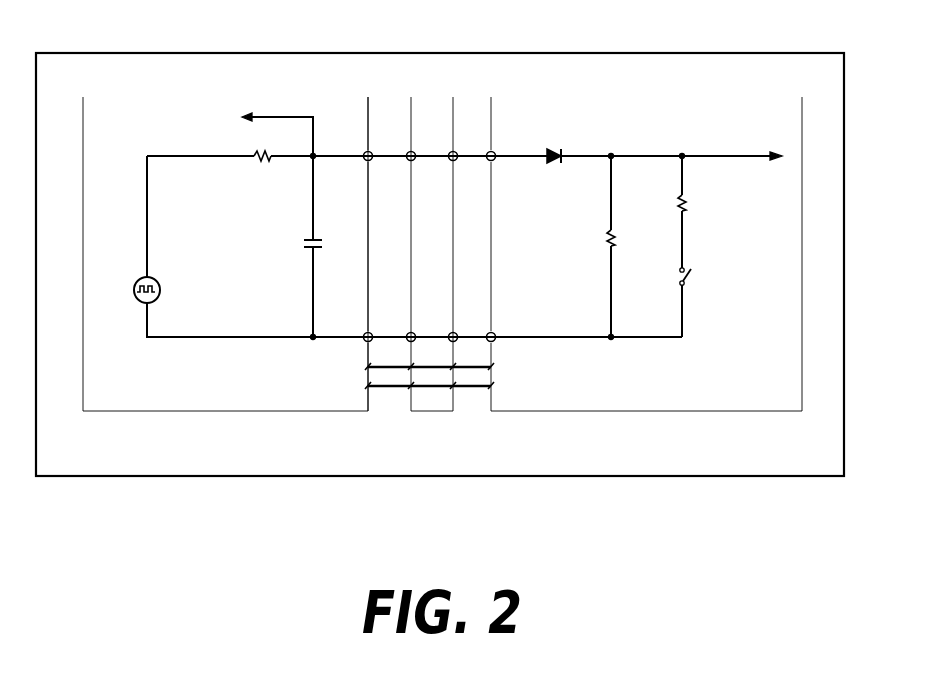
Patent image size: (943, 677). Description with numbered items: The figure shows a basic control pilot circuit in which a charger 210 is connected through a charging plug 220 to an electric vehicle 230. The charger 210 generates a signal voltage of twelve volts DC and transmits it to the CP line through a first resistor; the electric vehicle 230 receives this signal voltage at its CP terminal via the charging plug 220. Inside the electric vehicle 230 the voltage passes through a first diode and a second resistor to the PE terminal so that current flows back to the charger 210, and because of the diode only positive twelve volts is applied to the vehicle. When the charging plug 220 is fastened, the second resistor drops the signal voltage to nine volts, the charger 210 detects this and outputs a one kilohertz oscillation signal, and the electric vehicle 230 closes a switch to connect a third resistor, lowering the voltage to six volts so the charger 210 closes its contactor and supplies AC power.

The charger 210 is at (347, 284).
The charging plug 220 is at (526, 284).
The electric vehicle 230 is at (646, 284).